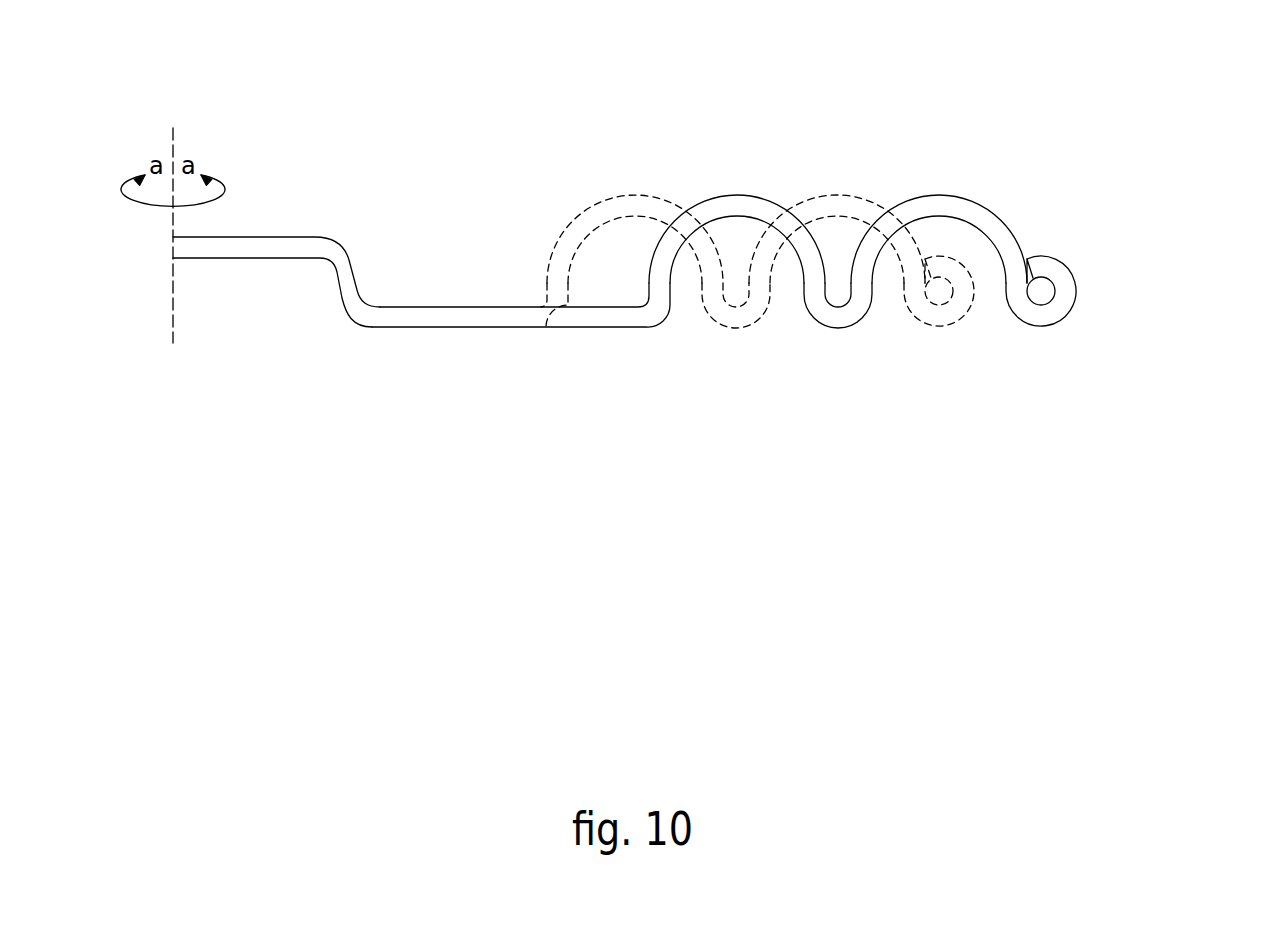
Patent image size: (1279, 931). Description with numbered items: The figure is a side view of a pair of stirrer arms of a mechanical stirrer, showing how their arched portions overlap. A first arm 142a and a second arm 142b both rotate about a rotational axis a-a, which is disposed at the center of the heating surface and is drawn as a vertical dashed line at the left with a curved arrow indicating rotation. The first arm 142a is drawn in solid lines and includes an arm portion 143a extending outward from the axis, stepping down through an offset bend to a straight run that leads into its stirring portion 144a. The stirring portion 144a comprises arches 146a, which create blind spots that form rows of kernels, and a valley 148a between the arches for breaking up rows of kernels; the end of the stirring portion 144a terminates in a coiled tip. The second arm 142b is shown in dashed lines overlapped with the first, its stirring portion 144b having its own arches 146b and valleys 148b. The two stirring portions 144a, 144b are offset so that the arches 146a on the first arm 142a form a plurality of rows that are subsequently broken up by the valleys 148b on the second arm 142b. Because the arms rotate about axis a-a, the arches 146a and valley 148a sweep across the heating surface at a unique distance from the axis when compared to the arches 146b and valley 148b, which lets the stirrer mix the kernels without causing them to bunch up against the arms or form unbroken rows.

The first arm 142a is at (347, 253).
The second arm 142b is at (550, 240).
The arm portion 143a is at (377, 328).
The stirring portion 144a is at (1060, 320).
The stirring portion 144b is at (957, 322).
The arches 146a is at (717, 186).
The arches 146b is at (603, 200).
The valley 148a is at (868, 307).
The valleys 148b is at (703, 308).